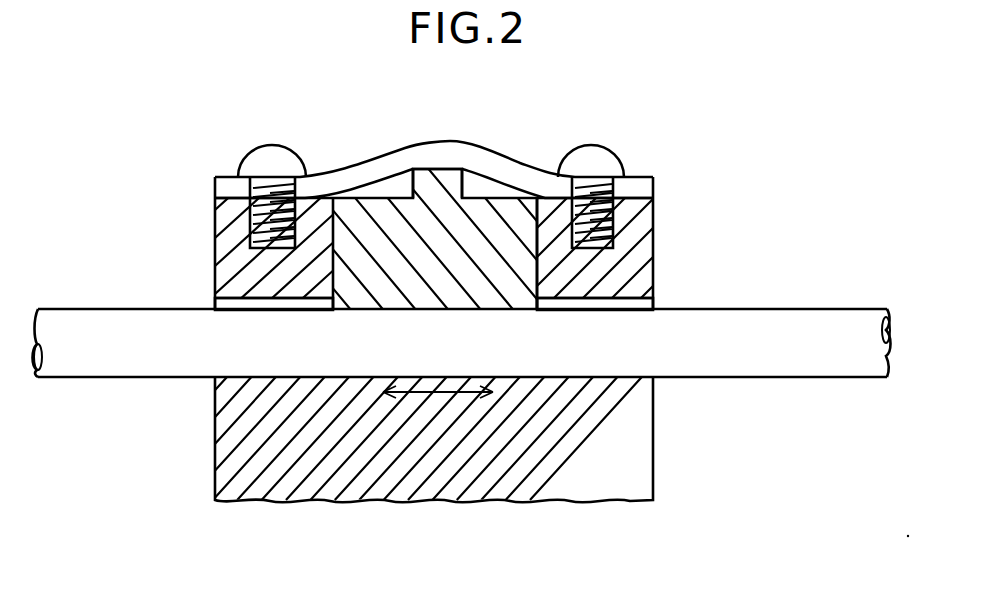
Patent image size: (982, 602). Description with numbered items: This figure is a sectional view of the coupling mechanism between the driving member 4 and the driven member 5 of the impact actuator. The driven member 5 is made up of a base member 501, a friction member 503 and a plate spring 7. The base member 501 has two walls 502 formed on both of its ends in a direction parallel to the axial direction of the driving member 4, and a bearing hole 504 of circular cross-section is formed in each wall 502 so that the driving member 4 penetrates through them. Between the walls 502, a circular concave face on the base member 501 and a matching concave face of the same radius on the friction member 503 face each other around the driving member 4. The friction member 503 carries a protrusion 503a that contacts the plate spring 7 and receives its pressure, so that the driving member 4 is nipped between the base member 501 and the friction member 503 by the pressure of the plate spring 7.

The driving member 4 is at (830, 325).
The driven member 5 is at (200, 458).
The plate spring 7 is at (503, 175).
The base member 501 is at (617, 446).
The walls 502 is at (232, 232).
The friction member 503 is at (383, 223).
The protrusion 503a is at (440, 175).
The bearing hole 504 is at (630, 303).